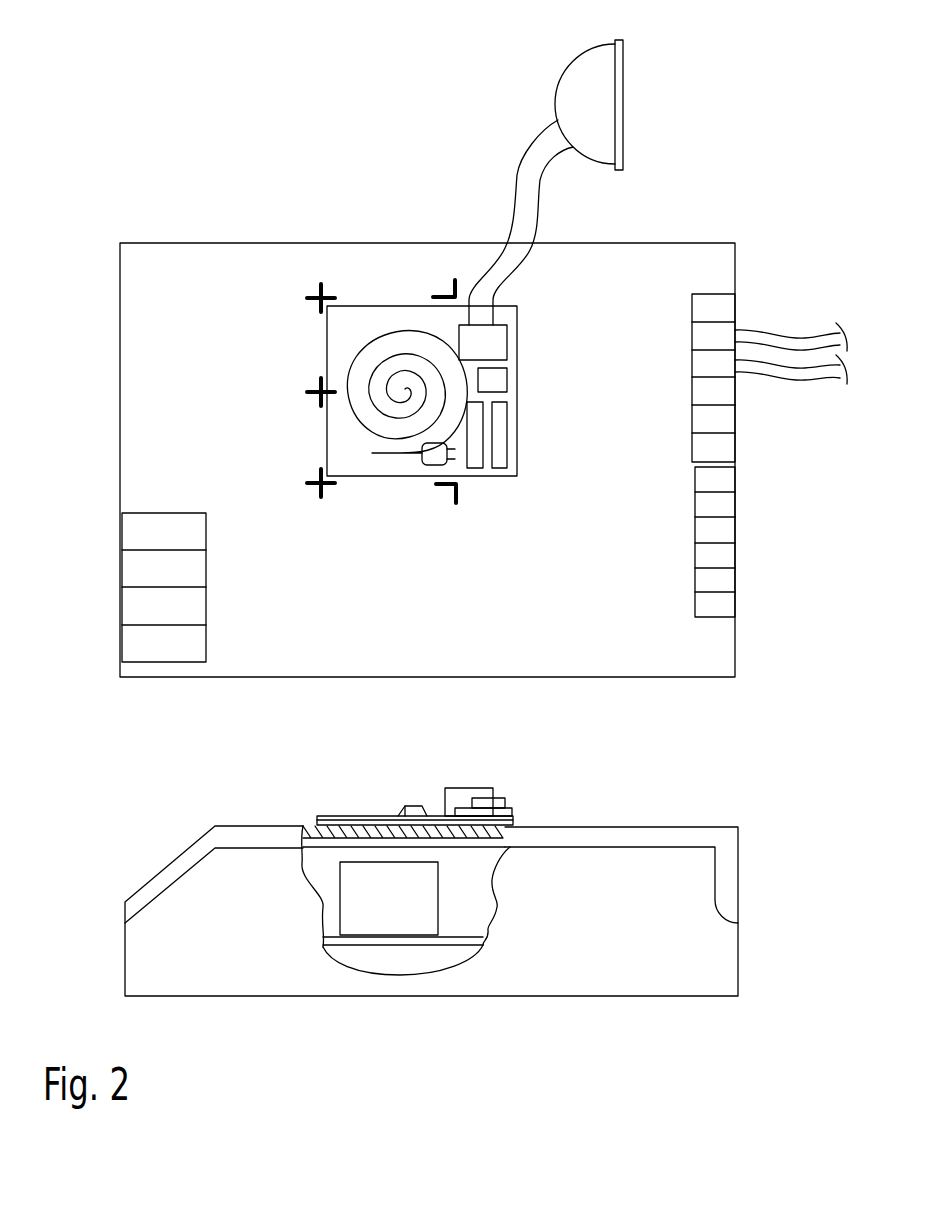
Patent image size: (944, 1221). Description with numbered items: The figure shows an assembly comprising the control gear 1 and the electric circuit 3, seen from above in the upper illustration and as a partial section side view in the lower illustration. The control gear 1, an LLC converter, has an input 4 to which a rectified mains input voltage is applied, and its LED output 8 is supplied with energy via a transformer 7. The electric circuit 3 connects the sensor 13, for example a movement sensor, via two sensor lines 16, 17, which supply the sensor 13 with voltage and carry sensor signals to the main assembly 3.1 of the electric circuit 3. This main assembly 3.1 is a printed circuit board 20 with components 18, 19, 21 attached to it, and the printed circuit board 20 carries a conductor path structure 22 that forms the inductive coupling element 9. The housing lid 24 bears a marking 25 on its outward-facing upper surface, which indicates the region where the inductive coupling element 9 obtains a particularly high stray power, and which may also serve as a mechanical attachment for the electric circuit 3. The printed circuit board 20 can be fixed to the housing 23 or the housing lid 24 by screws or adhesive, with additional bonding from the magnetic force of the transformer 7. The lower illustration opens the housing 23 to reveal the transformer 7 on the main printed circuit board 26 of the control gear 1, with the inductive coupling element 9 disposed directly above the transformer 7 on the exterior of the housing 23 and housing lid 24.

The control gear 1 is at (230, 243).
The electric circuit 3 is at (464, 518).
The main assembly 3.1 is at (373, 478).
The input 4 is at (106, 592).
The transformer 7 is at (425, 893).
The LED output 8 is at (786, 402).
The inductive coupling element 9 is at (397, 333).
The sensor 13 is at (590, 56).
The sensor line 16 is at (548, 175).
The sensor line 17 is at (517, 163).
The component 18 is at (507, 345).
The component 19 is at (507, 381).
The printed circuit board 20 is at (330, 816).
The component 21 is at (507, 437).
The conductor path structure 22 is at (342, 362).
The housing 23 is at (680, 993).
The housing lid 24 is at (725, 870).
The marking 25 is at (318, 492).
The main printed circuit board 26 is at (448, 947).